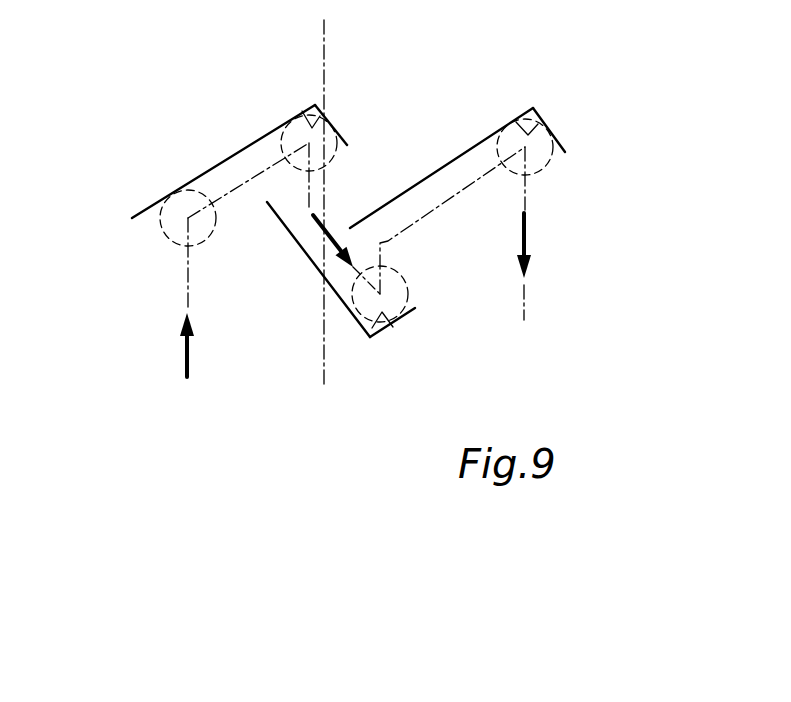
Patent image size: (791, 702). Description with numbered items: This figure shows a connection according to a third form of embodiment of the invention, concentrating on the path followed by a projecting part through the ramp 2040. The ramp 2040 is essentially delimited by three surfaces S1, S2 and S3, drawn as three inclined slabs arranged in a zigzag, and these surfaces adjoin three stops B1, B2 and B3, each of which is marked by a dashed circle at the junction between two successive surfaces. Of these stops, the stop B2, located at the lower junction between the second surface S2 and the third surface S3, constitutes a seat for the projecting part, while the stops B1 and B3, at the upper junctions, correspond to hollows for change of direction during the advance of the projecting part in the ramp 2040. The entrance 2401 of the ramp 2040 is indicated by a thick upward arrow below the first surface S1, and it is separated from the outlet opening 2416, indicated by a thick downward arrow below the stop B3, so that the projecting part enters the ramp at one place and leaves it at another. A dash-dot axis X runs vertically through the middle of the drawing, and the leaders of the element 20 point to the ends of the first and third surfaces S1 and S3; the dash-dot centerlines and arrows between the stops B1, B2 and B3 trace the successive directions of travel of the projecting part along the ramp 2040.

The ramp 2040 is at (304, 180).
The sheet of material 20 is at (304, 180).
The entrance 2401 is at (183, 307).
The outlet opening 2416 is at (524, 307).
The first surface S1 is at (147, 217).
The second surface S2 is at (300, 248).
The third surface S3 is at (457, 163).
The first stop B1 is at (304, 113).
The second stop B2 is at (393, 323).
The third stop B3 is at (537, 132).
The center axis X-X' X is at (337, 206).